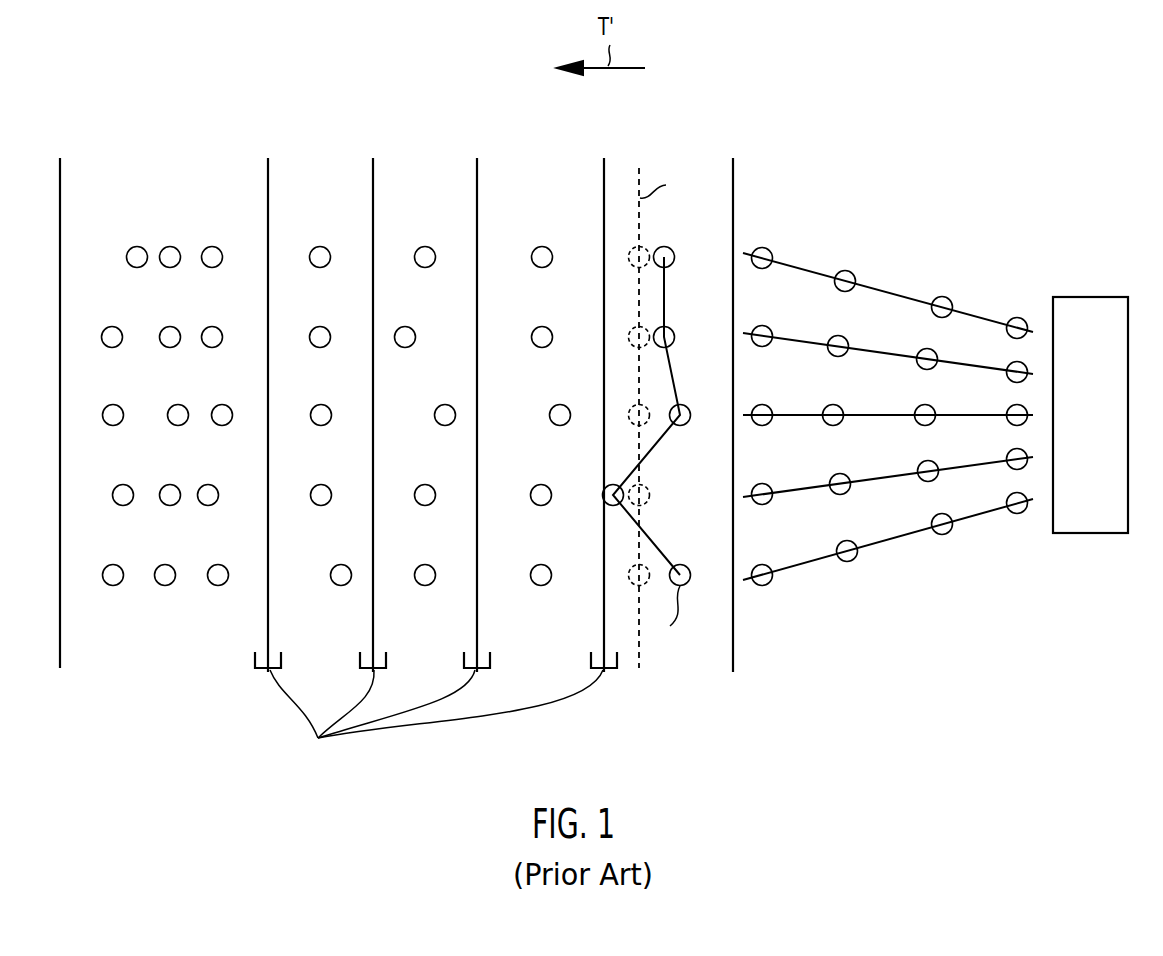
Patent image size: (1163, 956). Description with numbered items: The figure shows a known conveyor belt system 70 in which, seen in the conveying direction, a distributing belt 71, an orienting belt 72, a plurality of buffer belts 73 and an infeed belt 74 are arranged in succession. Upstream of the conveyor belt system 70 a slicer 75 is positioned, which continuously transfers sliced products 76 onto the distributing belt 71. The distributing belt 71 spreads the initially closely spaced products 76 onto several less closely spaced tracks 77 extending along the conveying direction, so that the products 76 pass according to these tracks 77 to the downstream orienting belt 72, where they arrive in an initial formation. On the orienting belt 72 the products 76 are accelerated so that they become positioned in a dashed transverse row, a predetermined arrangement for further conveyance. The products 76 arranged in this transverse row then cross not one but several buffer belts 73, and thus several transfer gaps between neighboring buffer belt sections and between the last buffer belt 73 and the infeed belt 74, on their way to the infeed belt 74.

The conveyor belt system 70 is at (776, 634).
The distributing belt 71 is at (889, 376).
The orienting belt 72 is at (690, 146).
The buffer belts 73 is at (608, 140).
The infeed belt 74 is at (159, 146).
The slicer 75 is at (1103, 423).
The sliced products 76 is at (1016, 317).
The tracks 77 is at (686, 262).